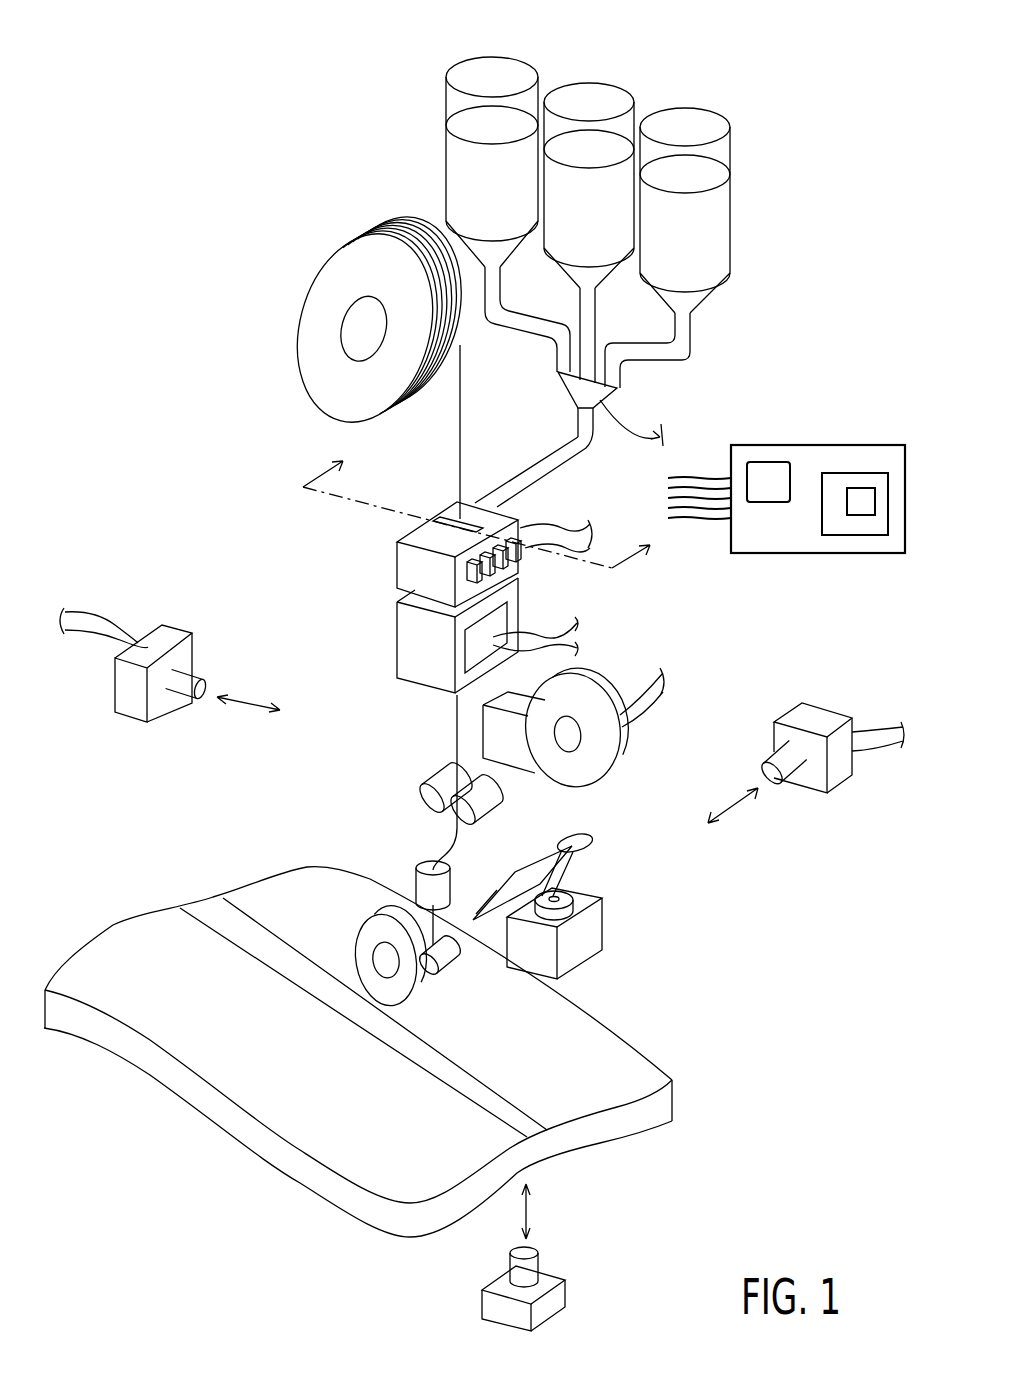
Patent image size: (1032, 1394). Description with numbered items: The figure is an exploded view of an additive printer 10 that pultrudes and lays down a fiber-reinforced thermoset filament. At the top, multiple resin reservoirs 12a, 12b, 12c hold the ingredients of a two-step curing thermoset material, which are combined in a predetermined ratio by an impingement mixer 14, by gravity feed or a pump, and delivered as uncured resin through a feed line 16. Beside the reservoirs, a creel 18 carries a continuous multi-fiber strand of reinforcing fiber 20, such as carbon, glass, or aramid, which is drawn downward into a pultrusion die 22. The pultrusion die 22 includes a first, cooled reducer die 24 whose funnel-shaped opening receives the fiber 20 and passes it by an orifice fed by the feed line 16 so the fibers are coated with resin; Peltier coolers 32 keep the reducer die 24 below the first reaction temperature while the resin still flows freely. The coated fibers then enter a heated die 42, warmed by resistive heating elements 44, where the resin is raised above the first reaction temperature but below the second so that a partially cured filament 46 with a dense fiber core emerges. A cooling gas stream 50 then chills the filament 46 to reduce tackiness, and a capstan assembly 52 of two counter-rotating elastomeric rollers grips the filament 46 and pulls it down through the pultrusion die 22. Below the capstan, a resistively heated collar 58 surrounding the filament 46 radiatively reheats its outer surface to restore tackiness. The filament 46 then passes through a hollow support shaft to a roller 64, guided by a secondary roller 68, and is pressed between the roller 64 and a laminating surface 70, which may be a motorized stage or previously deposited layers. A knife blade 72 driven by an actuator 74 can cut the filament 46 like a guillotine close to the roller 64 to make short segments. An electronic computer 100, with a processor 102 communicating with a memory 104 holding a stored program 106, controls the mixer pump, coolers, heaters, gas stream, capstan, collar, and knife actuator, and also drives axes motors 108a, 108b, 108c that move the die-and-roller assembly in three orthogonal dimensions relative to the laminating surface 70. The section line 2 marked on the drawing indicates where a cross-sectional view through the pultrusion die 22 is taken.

The additive printer 10 is at (825, 122).
The resin reservoir 12a is at (513, 79).
The resin reservoir 12b is at (612, 96).
The resin reservoir 12c is at (700, 123).
The impingement mixer 14 is at (639, 389).
The feed line 16 is at (552, 478).
The creel 18 is at (281, 314).
The reinforcing fiber 20 is at (460, 430).
The pultrusion die 22 is at (358, 533).
The reducer die 24 is at (397, 563).
The Peltier coolers 32 is at (517, 566).
The heated die 42 is at (397, 637).
The resistive heating elements 44 is at (482, 655).
The partially cured filament 46 is at (457, 728).
The cooling gas stream 50 is at (623, 733).
The capstan assembly 52 is at (395, 798).
The resistively heated collar 58 is at (412, 866).
The roller 64 is at (401, 993).
The secondary roller 68 is at (447, 978).
The laminating surface 70 is at (256, 1092).
The knife blade 72 is at (490, 873).
The actuator 74 is at (572, 932).
The electronic computer 100 is at (786, 484).
The processor 102 is at (770, 470).
The memory 104 is at (860, 473).
The stored program 106 is at (858, 515).
The axes motor 108a is at (840, 788).
The axes motor 108b is at (567, 1290).
The axes motor 108c is at (128, 719).
The section line 2- 2 is at (486, 506).